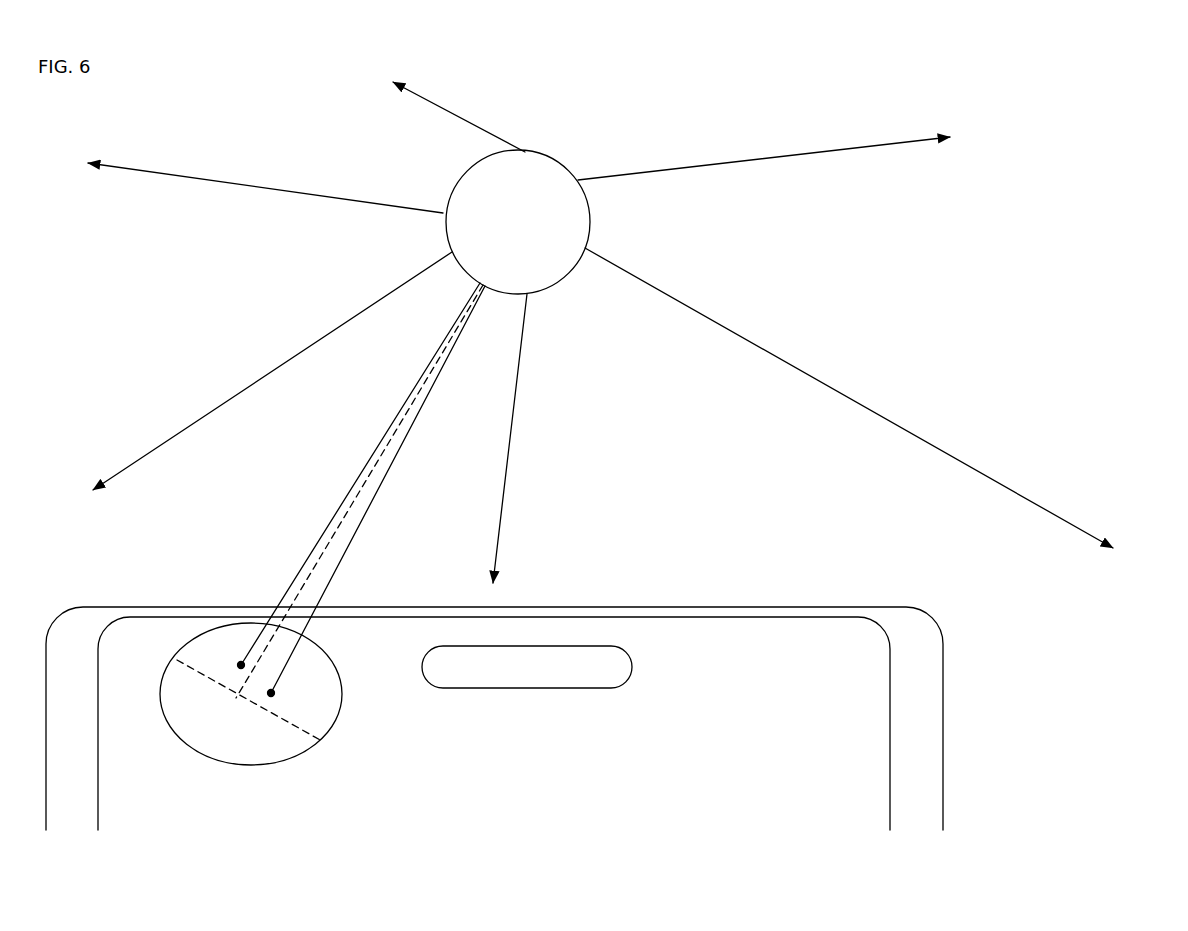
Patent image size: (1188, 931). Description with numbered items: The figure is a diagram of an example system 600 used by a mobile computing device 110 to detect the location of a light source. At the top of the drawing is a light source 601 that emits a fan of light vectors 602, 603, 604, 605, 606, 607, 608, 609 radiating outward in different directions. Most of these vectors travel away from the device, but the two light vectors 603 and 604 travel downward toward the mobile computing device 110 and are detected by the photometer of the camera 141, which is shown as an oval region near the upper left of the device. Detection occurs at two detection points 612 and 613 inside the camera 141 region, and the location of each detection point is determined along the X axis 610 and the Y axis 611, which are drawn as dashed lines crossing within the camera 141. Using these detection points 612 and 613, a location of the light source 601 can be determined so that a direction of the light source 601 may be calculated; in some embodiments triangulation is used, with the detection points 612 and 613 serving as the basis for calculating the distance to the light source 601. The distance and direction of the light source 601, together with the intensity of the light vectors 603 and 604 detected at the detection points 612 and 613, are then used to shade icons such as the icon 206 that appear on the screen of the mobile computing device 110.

The system 600 is at (1117, 93).
The light source 601 is at (518, 222).
The light vector 602 is at (472, 122).
The light vector 603 is at (375, 453).
The light vector 604 is at (372, 503).
The light vector 605 is at (718, 160).
The light vector 606 is at (728, 330).
The light vector 607 is at (508, 453).
The light vector 608 is at (237, 393).
The light vector 609 is at (230, 180).
The X axis 610 is at (340, 755).
The Y axis 611 is at (232, 710).
The detection point 612 is at (241, 668).
The detection point 613 is at (272, 697).
The camera 141 is at (260, 764).
The mobile computing device 110 is at (943, 722).
The icon 206 is at (494, 692).